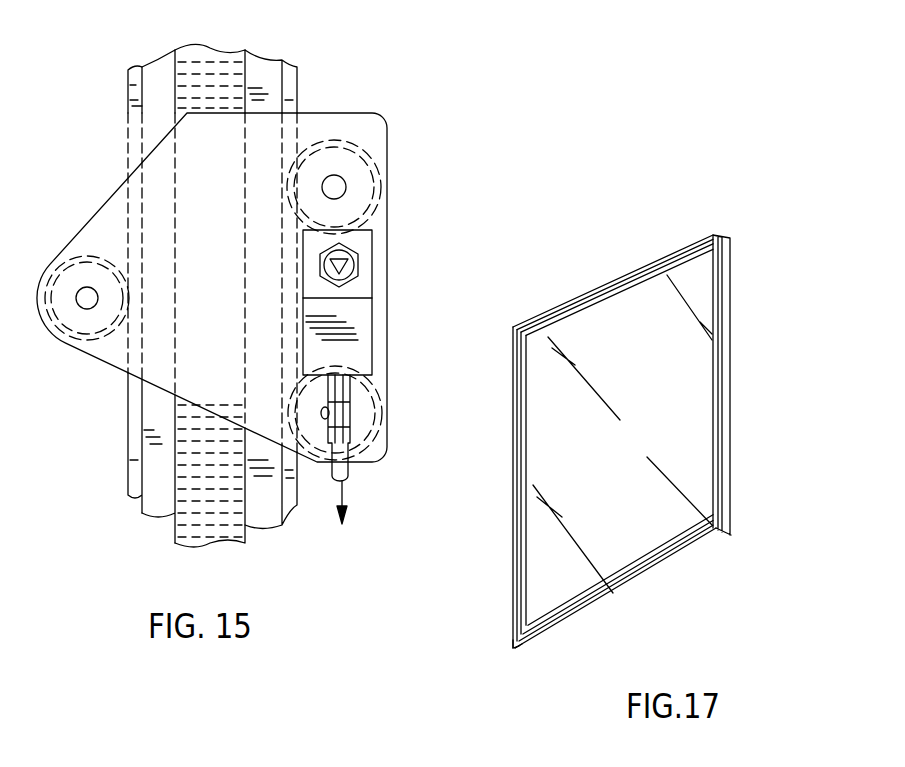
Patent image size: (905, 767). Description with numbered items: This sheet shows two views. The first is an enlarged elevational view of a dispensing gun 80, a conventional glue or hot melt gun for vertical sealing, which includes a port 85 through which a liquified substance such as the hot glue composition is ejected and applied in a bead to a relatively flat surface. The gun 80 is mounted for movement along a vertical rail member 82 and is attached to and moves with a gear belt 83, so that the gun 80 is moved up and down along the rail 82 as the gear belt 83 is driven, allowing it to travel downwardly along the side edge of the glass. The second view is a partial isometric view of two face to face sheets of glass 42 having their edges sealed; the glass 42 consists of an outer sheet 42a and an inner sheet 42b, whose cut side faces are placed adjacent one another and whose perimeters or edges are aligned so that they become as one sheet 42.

In FIG. 15, the dispensing gun 80 is at (373, 113).
In FIG. 15, the vertical rail member 82 is at (298, 82).
In FIG. 15, the gear belt 83 is at (177, 108).
In FIG. 15, the port 85 is at (353, 272).
In FIG. 17, the glass sheets 42 is at (700, 383).
In FIG. 17, the outer sheet 42a is at (527, 650).
In FIG. 17, the inner sheet 42b is at (515, 628).